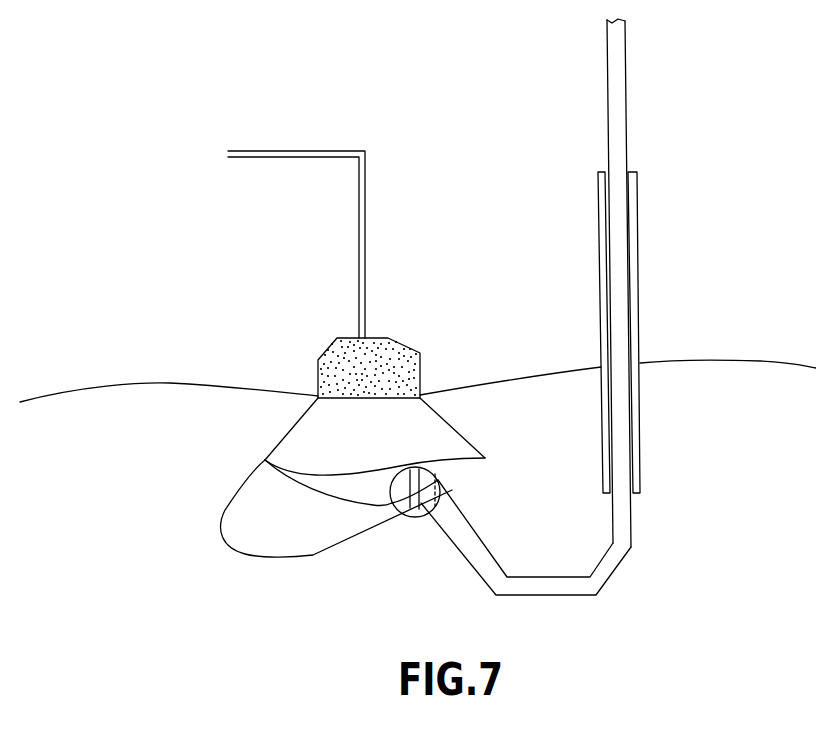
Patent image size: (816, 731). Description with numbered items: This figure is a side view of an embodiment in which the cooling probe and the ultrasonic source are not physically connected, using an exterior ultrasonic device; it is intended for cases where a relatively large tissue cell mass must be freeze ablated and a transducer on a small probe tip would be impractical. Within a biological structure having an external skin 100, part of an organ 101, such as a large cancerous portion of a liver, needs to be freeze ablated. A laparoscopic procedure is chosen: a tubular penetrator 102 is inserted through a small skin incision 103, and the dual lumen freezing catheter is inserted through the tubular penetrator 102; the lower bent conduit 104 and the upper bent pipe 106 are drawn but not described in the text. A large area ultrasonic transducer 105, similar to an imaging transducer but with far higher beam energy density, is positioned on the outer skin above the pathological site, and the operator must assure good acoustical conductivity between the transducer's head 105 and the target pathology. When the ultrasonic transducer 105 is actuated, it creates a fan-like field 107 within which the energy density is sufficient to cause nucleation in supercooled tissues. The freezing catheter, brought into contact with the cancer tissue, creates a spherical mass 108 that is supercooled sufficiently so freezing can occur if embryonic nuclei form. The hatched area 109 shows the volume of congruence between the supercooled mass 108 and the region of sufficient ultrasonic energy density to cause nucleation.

The external skin 100 is at (184, 384).
The organ 101 is at (255, 510).
The tubular penetrator 102 is at (600, 279).
The skin incision 103 is at (600, 366).
The bent conduit 104 is at (614, 565).
The ultrasonic transducer 105 is at (353, 341).
The bent pipe 106 is at (305, 152).
The fan-like field 107 is at (313, 430).
The spherical mass 108 is at (415, 510).
The hatched area 109 is at (485, 458).